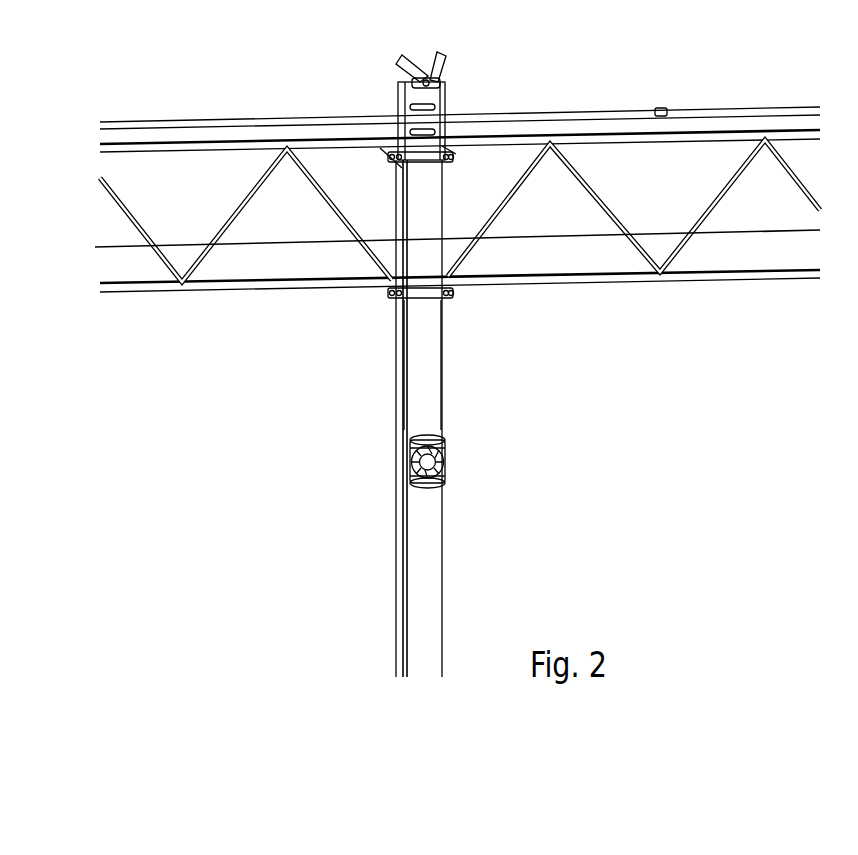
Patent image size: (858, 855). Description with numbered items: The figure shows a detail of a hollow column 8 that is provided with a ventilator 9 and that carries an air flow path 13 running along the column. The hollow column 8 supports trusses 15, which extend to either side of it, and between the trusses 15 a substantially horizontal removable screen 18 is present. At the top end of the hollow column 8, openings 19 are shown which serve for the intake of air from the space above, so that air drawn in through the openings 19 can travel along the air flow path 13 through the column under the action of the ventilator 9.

The hollow column 8 is at (423, 572).
The ventilator 9 is at (438, 462).
The air flow path 13 is at (428, 392).
The trusses 15 is at (662, 270).
The horizontal removable screen 18 is at (283, 242).
The openings 19 is at (438, 93).